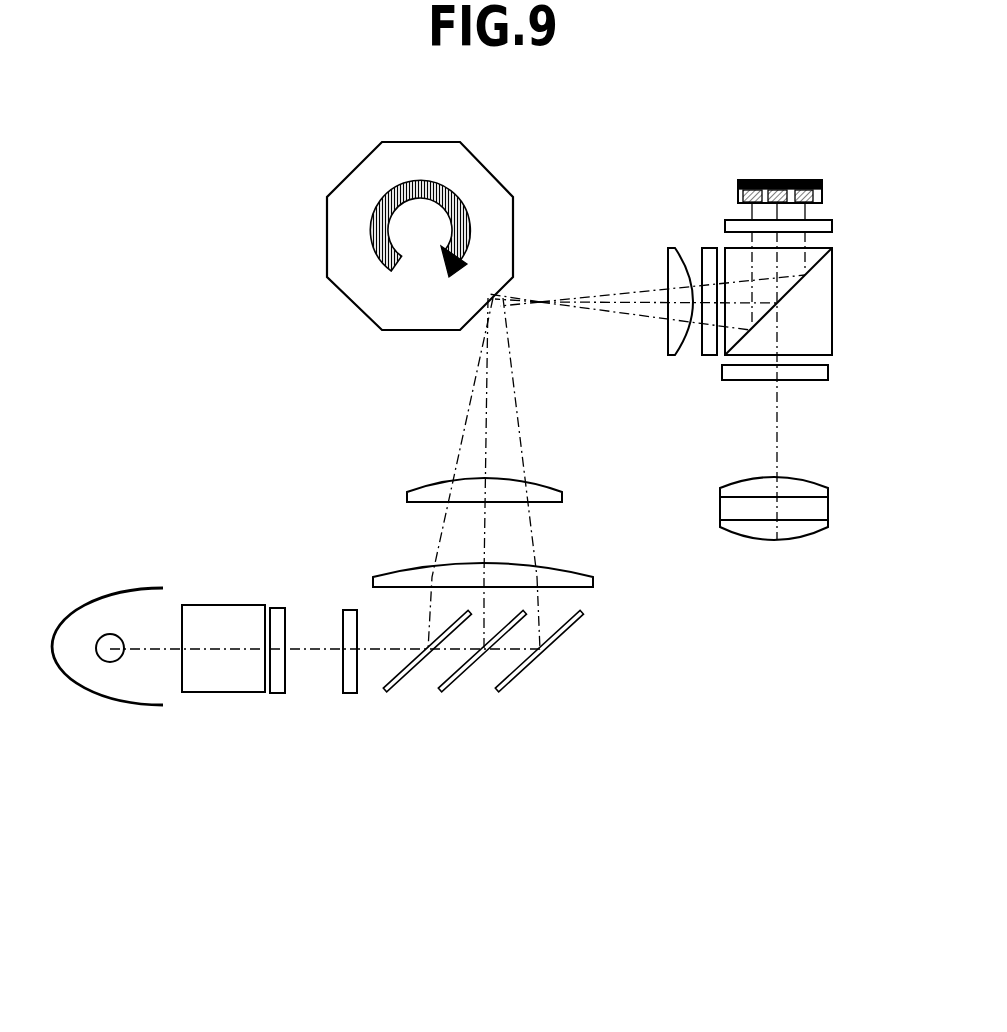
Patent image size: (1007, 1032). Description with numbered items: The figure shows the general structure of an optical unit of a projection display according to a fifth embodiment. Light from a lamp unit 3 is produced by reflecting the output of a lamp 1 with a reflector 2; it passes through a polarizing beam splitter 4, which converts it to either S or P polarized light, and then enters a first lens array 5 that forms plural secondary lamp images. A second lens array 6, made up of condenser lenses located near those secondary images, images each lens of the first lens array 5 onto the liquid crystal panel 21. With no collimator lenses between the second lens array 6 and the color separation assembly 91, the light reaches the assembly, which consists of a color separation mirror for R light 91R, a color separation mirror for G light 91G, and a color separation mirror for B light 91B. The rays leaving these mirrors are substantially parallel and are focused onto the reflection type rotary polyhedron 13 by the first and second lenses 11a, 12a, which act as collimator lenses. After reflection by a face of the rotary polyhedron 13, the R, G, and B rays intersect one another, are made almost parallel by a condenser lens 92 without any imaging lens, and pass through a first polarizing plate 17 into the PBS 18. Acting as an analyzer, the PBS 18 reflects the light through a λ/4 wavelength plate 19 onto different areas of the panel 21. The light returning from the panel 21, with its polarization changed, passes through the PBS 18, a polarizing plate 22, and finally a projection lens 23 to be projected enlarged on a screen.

The lamp 1 is at (129, 634).
The reflector 2 is at (97, 612).
The lamp unit 3 is at (109, 678).
The polarizing beam splitter 4 is at (218, 605).
The first lens array 5 is at (277, 608).
The second lens array 6 is at (347, 610).
The first lens 11a is at (593, 583).
The second lens 12a is at (562, 497).
The reflection type rotary polyhedron 13 is at (348, 192).
The first polarizing plate 17 is at (707, 247).
The PBS 18 is at (832, 317).
The λ/4 wavelength plate 19 is at (832, 225).
The liquid crystal panel 21 is at (822, 185).
The polarizing plate 22 is at (828, 372).
The projection lens 23 is at (790, 540).
The color separation assembly 91 is at (467, 739).
The color separation mirror for R light 91R is at (385, 692).
The color separation mirror for G light 91G is at (440, 692).
The color separation mirror for B light 91B is at (534, 691).
The condenser lens 92 is at (668, 245).